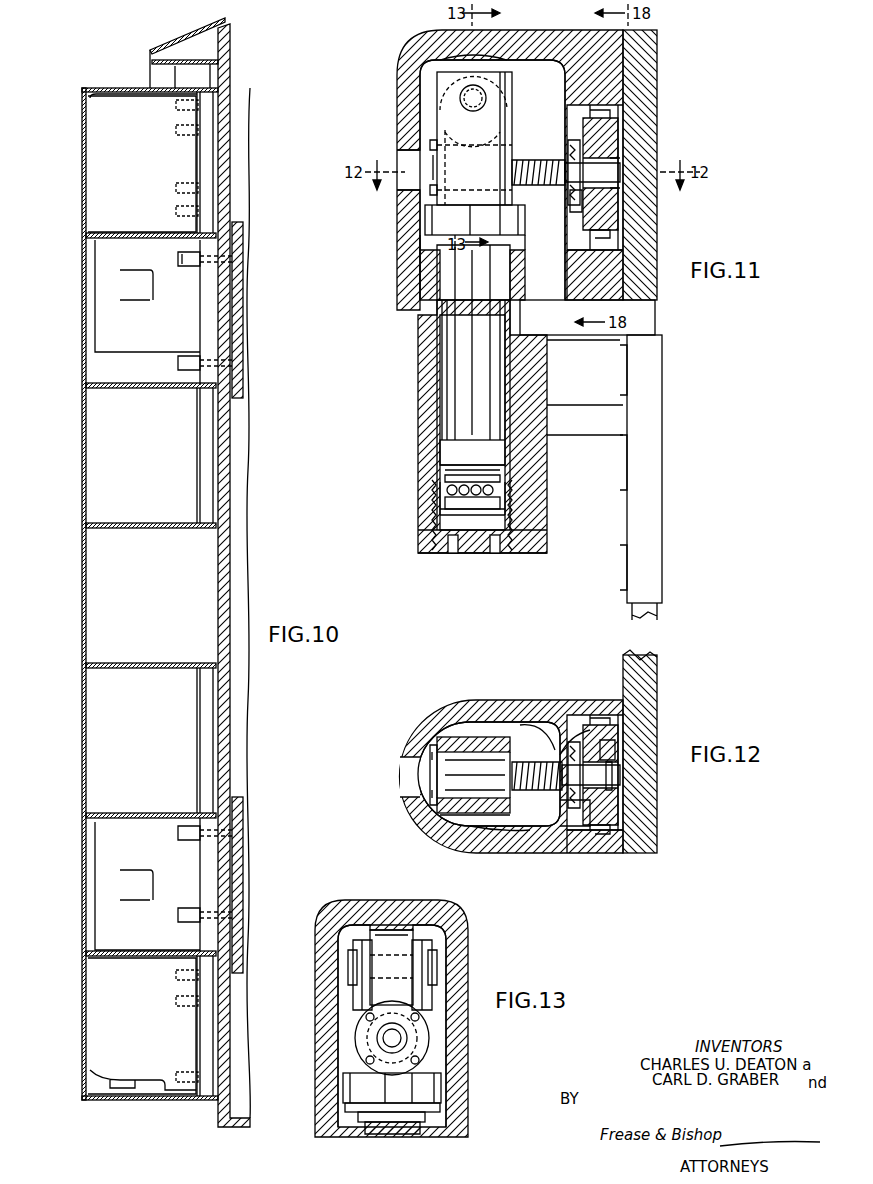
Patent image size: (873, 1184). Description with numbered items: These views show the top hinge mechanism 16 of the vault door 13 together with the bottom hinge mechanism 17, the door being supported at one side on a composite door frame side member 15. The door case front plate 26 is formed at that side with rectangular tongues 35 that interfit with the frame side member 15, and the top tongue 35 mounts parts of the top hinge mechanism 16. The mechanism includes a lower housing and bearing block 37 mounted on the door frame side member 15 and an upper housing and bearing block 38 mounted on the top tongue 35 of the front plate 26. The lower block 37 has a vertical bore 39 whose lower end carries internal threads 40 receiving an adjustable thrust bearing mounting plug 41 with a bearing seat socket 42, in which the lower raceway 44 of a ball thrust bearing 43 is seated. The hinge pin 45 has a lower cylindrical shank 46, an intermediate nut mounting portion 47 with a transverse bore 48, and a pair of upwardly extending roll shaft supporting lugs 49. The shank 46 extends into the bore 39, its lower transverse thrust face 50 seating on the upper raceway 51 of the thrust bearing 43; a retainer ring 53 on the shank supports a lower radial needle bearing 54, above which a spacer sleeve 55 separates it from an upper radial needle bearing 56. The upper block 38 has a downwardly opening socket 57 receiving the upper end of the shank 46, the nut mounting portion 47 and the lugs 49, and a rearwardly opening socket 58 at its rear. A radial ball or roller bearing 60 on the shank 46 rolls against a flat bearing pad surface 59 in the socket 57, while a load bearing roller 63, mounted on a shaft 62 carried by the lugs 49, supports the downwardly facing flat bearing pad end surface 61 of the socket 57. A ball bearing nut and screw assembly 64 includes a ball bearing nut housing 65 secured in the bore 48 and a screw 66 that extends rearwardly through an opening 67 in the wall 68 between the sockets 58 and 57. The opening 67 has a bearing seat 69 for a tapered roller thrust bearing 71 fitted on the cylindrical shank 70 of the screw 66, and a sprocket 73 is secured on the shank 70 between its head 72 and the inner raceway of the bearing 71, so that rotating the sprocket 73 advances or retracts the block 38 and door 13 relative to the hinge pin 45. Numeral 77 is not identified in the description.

In FIG. 11, the vault door 13 is at (657, 68).
In FIG. 10, the door frame side member 15 is at (226, 497).
In FIG. 10, the top hinge mechanism 16 is at (100, 197).
In FIG. 11, the top hinge mechanism 16 is at (415, 387).
In FIG. 10, the bottom hinge mechanism 17 is at (92, 935).
In FIG. 11, the door case front plate 26 is at (655, 325).
In FIG. 10, the tongue 35 is at (206, 154).
In FIG. 11, the tongue 35 is at (650, 245).
In FIG. 12, the tongue 35 is at (640, 816).
In FIG. 10, the lower housing and bearing block 37 is at (98, 343).
In FIG. 11, the lower housing and bearing block 37 is at (582, 553).
In FIG. 10, the upper housing and bearing block 38 is at (100, 130).
In FIG. 11, the upper housing and bearing block 38 is at (400, 90).
In FIG. 12, the upper housing and bearing block 38 is at (432, 718).
In FIG. 13, the upper housing and bearing block 38 is at (463, 1050).
In FIG. 11, the vertical bore 39 is at (440, 490).
In FIG. 11, the internal threads 40 is at (438, 525).
In FIG. 11, the adjustable thrust bearing mounting plug 41 is at (474, 555).
In FIG. 11, the bearing seat socket 42 is at (490, 513).
In FIG. 11, the ball thrust bearing 43 is at (498, 488).
In FIG. 11, the lower raceway 44 is at (505, 500).
In FIG. 11, the hinge pin 45 is at (508, 120).
In FIG. 13, the hinge pin 45 is at (362, 1124).
In FIG. 11, the lower cylindrical shank 46 is at (472, 342).
In FIG. 13, the lower cylindrical shank 46 is at (385, 1128).
In FIG. 12, the nut mounting portion 47 is at (470, 740).
In FIG. 12, the bore 48 is at (480, 740).
In FIG. 11, the roll shaft supporting lugs 49 is at (440, 82).
In FIG. 13, the roll shaft supporting lugs 49 is at (355, 988).
In FIG. 11, the lower transverse thrust face 50 is at (472, 460).
In FIG. 11, the upper raceway 51 is at (440, 478).
In FIG. 11, the retainer ring 53 is at (445, 463).
In FIG. 11, the lower radial needle bearing 54 is at (505, 448).
In FIG. 11, the spacer sleeve 55 is at (440, 328).
In FIG. 11, the upper radial needle bearing 56 is at (450, 266).
In FIG. 11, the downwardly opening socket 57 is at (425, 100).
In FIG. 12, the downwardly opening socket 57 is at (510, 725).
In FIG. 13, the downwardly opening socket 57 is at (442, 938).
In FIG. 11, the rearwardly opening socket 58 is at (618, 218).
In FIG. 12, the rearwardly opening socket 58 is at (620, 822).
In FIG. 12, the flat bearing pad surface 59 is at (500, 829).
In FIG. 13, the flat bearing pad surface 59 is at (445, 1085).
In FIG. 11, the radial ball or roller bearing 60 is at (437, 218).
In FIG. 12, the radial ball or roller bearing 60 is at (470, 818).
In FIG. 13, the radial ball or roller bearing 60 is at (350, 1088).
In FIG. 11, the downwardly facing flat bearing pad end surface 61 is at (525, 60).
In FIG. 13, the downwardly facing flat bearing pad end surface 61 is at (405, 930).
In FIG. 11, the shaft 62 is at (483, 96).
In FIG. 13, the shaft 62 is at (350, 963).
In FIG. 11, the load bearing roller 63 is at (483, 65).
In FIG. 13, the load bearing roller 63 is at (382, 932).
In FIG. 11, the ball bearing nut and screw assembly 64 is at (552, 188).
In FIG. 12, the ball bearing nut and screw assembly 64 is at (547, 792).
In FIG. 12, the ball bearing nut housing 65 is at (440, 772).
In FIG. 13, the ball bearing nut housing 65 is at (375, 1035).
In FIG. 12, the screw 66 is at (538, 758).
In FIG. 13, the screw 66 is at (400, 1038).
In FIG. 12, the opening 67 is at (558, 735).
In FIG. 12, the wall 68 is at (580, 806).
In FIG. 11, the bearing seat 69 is at (585, 128).
In FIG. 12, the bearing seat 69 is at (575, 745).
In FIG. 12, the cylindrical shank 70 is at (595, 772).
In FIG. 11, the tapered roller thrust bearing 71 is at (575, 214).
In FIG. 12, the tapered roller thrust bearing 71 is at (612, 752).
In FIG. 12, the head 72 is at (602, 782).
In FIG. 11, the sprocket 73 is at (617, 135).
In FIG. 12, the sprocket 73 is at (605, 735).
In FIG. 10, the lower compartment 77 is at (105, 1046).